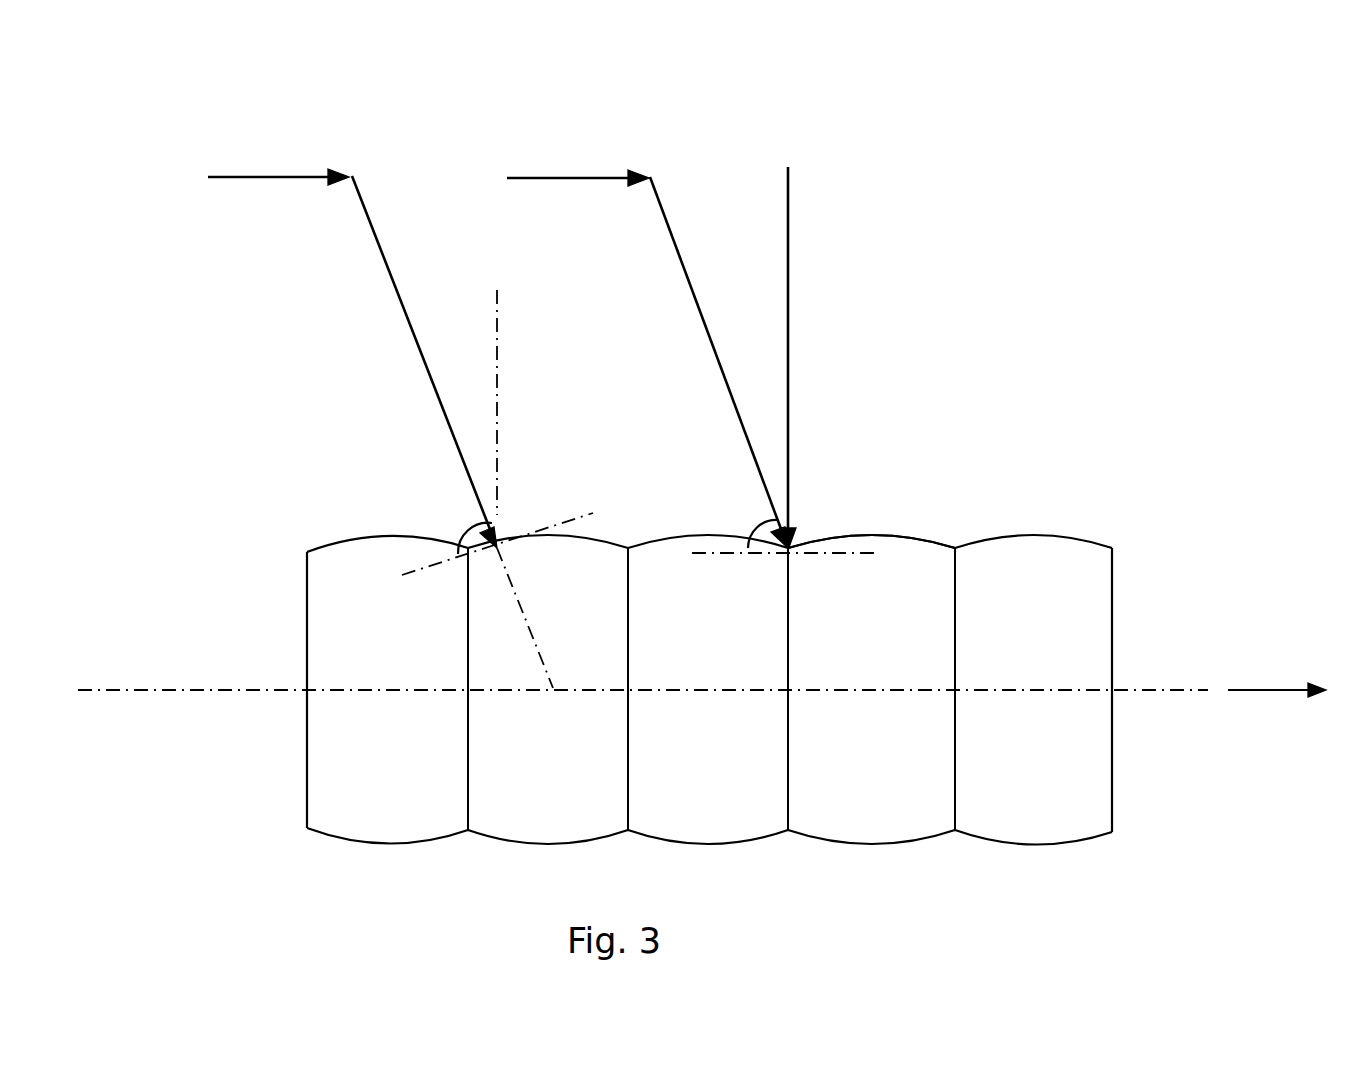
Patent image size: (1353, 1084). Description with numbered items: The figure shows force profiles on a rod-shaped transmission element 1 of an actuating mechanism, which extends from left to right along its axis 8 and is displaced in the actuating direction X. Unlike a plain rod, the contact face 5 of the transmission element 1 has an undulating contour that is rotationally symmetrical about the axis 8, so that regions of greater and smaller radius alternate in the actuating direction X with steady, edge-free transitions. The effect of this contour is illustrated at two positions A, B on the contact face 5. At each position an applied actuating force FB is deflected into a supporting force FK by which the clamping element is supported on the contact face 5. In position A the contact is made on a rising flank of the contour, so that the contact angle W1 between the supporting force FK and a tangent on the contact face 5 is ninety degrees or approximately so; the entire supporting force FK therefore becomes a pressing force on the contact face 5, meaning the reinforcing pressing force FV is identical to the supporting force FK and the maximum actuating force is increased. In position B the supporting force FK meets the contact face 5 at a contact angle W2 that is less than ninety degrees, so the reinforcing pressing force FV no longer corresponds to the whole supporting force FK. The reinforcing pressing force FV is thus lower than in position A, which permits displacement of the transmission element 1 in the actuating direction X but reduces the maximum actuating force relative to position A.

The transmission element 1 is at (1025, 600).
The contact face 5 is at (830, 545).
The axis 8 is at (133, 688).
The actuating direction X is at (1283, 688).
The position A is at (213, 383).
The position B is at (906, 372).
The actuating force FB is at (590, 175).
The supporting force FK is at (672, 240).
The reinforcing pressing force FV is at (790, 338).
The contact angle W1 is at (455, 535).
The contact angle W2 is at (745, 535).